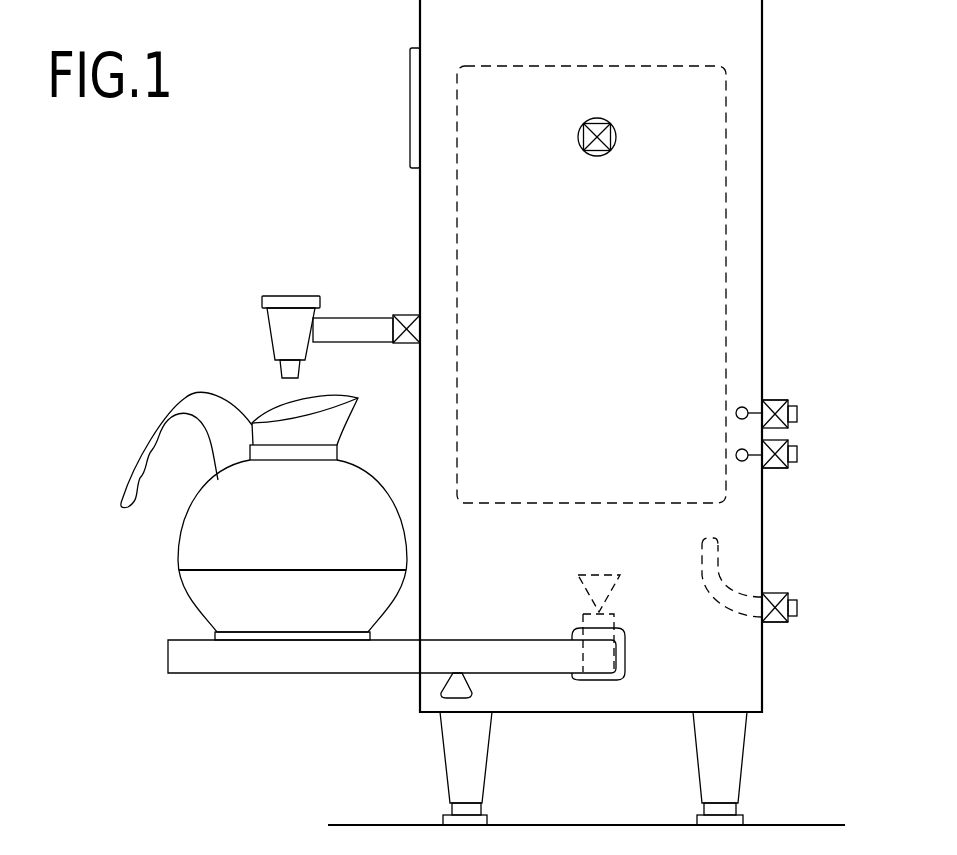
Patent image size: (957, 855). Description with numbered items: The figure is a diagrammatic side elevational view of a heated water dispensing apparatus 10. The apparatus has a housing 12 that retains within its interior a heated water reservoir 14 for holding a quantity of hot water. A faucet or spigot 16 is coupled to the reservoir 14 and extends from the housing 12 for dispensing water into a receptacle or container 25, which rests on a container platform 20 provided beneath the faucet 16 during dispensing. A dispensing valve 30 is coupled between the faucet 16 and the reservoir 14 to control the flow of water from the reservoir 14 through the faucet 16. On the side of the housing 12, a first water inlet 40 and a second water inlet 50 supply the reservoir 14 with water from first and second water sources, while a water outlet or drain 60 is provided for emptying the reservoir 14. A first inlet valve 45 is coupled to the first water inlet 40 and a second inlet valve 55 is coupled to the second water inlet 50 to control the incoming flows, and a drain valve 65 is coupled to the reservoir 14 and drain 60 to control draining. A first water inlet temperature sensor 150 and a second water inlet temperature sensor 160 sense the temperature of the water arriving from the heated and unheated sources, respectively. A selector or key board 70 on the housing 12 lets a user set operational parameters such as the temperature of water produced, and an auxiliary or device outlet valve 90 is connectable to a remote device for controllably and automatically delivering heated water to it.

The heated water dispensing apparatus 10 is at (784, 145).
The housing 12 is at (416, 221).
The heated water reservoir 14 is at (720, 278).
The faucet or spigot 16 is at (270, 325).
The container platform 20 is at (210, 665).
The receptacle or container 25 is at (190, 548).
The dispensing valve 30 is at (405, 315).
The first water inlet 40 is at (797, 412).
The first inlet valve 45 is at (766, 400).
The second water inlet 50 is at (797, 455).
The second inlet valve 55 is at (778, 468).
The water outlet or drain 60 is at (797, 607).
The drain valve 65 is at (778, 622).
The selector or key board 70 is at (408, 78).
The auxiliary or device outlet valve 90 is at (594, 156).
The first water inlet temperature sensor 150 is at (742, 407).
The second water inlet temperature sensor 160 is at (742, 461).